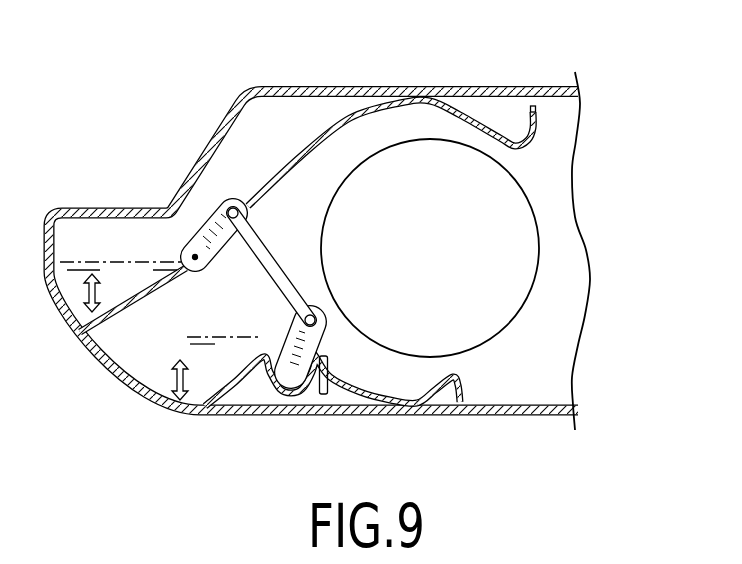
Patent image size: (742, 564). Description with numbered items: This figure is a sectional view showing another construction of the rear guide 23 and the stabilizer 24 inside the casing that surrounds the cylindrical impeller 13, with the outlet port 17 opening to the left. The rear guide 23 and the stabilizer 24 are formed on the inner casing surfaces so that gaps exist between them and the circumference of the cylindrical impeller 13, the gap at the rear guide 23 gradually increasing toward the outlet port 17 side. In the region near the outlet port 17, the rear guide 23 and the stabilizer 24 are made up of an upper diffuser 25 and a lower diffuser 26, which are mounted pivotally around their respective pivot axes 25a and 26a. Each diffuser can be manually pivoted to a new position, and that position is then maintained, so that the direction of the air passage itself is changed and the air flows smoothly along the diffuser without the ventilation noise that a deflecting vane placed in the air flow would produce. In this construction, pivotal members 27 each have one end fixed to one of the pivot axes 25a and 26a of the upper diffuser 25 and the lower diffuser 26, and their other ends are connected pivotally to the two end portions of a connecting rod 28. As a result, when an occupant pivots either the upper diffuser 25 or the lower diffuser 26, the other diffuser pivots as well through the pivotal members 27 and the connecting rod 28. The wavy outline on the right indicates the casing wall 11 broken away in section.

The housing 11 is at (575, 215).
The cylindrical impeller 13 is at (518, 308).
The outlet port 17 is at (117, 370).
The rear guide 23 is at (318, 128).
The stabilizer 24 is at (411, 410).
The upper diffuser 25 is at (143, 287).
The pivot axis 25a is at (186, 245).
The lower diffuser 26 is at (230, 388).
The pivot axis 26a is at (293, 387).
The pivotal member 27 is at (228, 203).
The connecting rod 28 is at (272, 264).